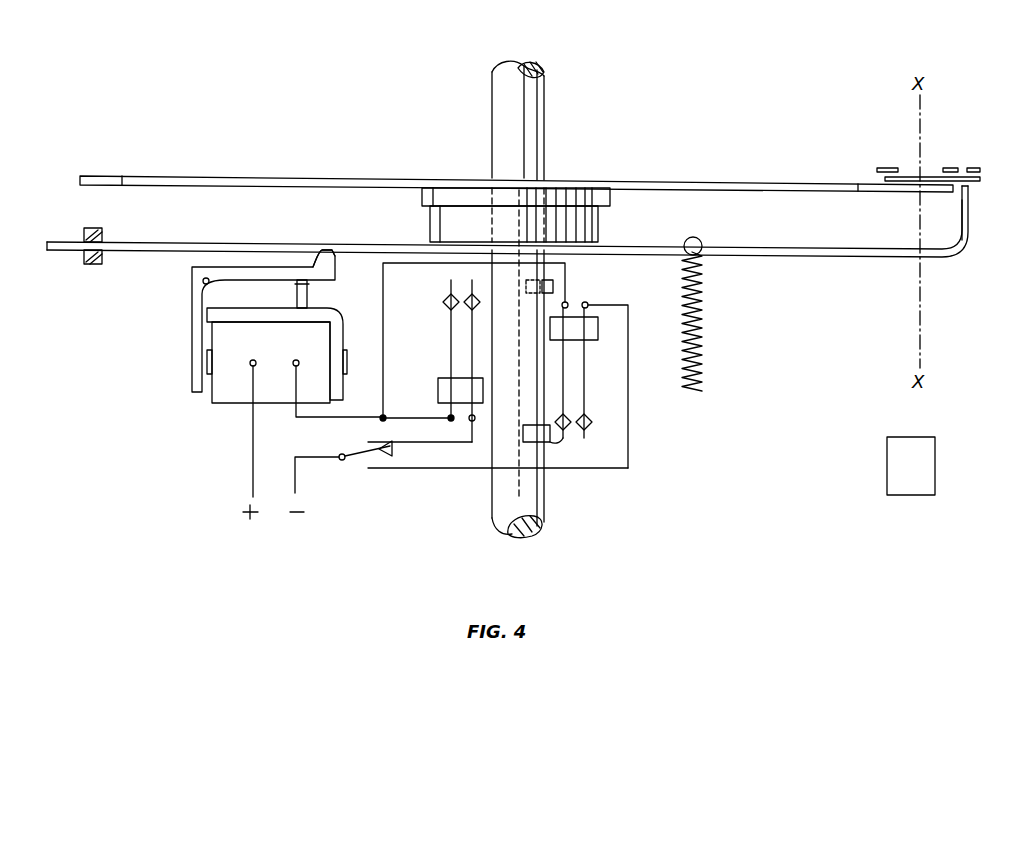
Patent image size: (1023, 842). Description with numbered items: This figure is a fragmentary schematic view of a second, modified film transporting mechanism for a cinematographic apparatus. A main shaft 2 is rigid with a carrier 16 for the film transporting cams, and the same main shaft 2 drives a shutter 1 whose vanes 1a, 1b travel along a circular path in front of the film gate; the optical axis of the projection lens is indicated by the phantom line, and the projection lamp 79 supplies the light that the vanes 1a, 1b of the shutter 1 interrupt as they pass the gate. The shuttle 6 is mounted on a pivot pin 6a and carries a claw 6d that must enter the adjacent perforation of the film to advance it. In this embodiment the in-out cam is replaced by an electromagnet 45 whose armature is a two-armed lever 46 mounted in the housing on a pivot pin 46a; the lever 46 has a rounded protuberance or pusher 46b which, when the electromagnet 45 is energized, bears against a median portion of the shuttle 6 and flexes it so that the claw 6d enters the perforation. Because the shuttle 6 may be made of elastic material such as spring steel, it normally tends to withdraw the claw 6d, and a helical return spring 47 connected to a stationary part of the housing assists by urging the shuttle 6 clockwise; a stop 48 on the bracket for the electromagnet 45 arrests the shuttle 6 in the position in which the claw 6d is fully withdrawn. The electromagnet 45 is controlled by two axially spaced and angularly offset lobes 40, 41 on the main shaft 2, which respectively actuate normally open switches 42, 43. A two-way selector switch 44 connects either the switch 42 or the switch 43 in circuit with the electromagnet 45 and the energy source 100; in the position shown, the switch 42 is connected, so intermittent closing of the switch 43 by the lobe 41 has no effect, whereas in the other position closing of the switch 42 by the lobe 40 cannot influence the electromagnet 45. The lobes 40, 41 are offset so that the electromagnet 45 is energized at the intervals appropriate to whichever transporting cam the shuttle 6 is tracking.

The shutter 1 is at (745, 184).
The shutter vane 1a is at (872, 193).
The shutter vane 1b is at (92, 178).
The main shaft 2 is at (534, 100).
The shuttle 6 is at (850, 258).
The pivot pin 6a is at (100, 236).
The claw 6d is at (966, 228).
The carrier 16 is at (584, 230).
The lobe 40 is at (553, 287).
The lobe 41 is at (548, 444).
The switch 42 is at (460, 290).
The switch 43 is at (572, 438).
The two-way selector switch 44 is at (348, 461).
The electromagnet 45 is at (234, 390).
The two-armed lever 46 is at (190, 336).
The pivot pin 46a is at (203, 283).
The pusher 46b is at (332, 262).
The helical return spring 47 is at (694, 362).
The stop 48 is at (308, 298).
The projection lamp 79 is at (904, 466).
The energy source 100 is at (266, 508).